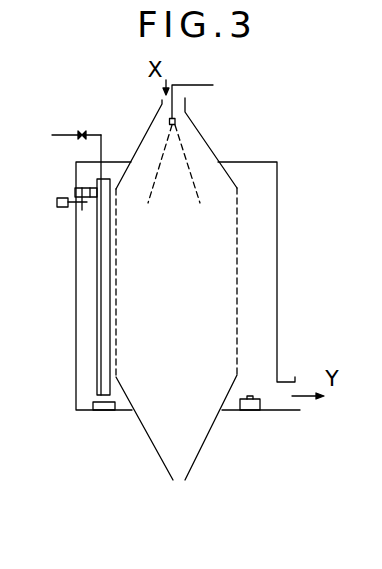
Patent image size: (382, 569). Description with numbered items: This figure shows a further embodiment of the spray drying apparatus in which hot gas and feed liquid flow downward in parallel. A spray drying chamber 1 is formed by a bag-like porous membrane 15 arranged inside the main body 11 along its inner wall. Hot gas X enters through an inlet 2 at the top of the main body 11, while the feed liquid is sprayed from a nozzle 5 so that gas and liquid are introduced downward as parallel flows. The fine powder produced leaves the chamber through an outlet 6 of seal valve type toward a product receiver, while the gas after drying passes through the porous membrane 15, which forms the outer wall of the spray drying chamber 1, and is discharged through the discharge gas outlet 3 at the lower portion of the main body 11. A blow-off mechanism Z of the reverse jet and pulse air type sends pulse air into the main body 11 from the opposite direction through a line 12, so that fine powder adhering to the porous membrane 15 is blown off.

The spray drying chamber 1 is at (228, 267).
The inlet 2 is at (162, 107).
The discharge gas outlet 3 is at (295, 377).
The nozzle 5 is at (177, 123).
The outlet 6 is at (173, 468).
The main body 11 is at (277, 228).
The line 12 is at (98, 137).
The porous membrane 15 is at (238, 217).